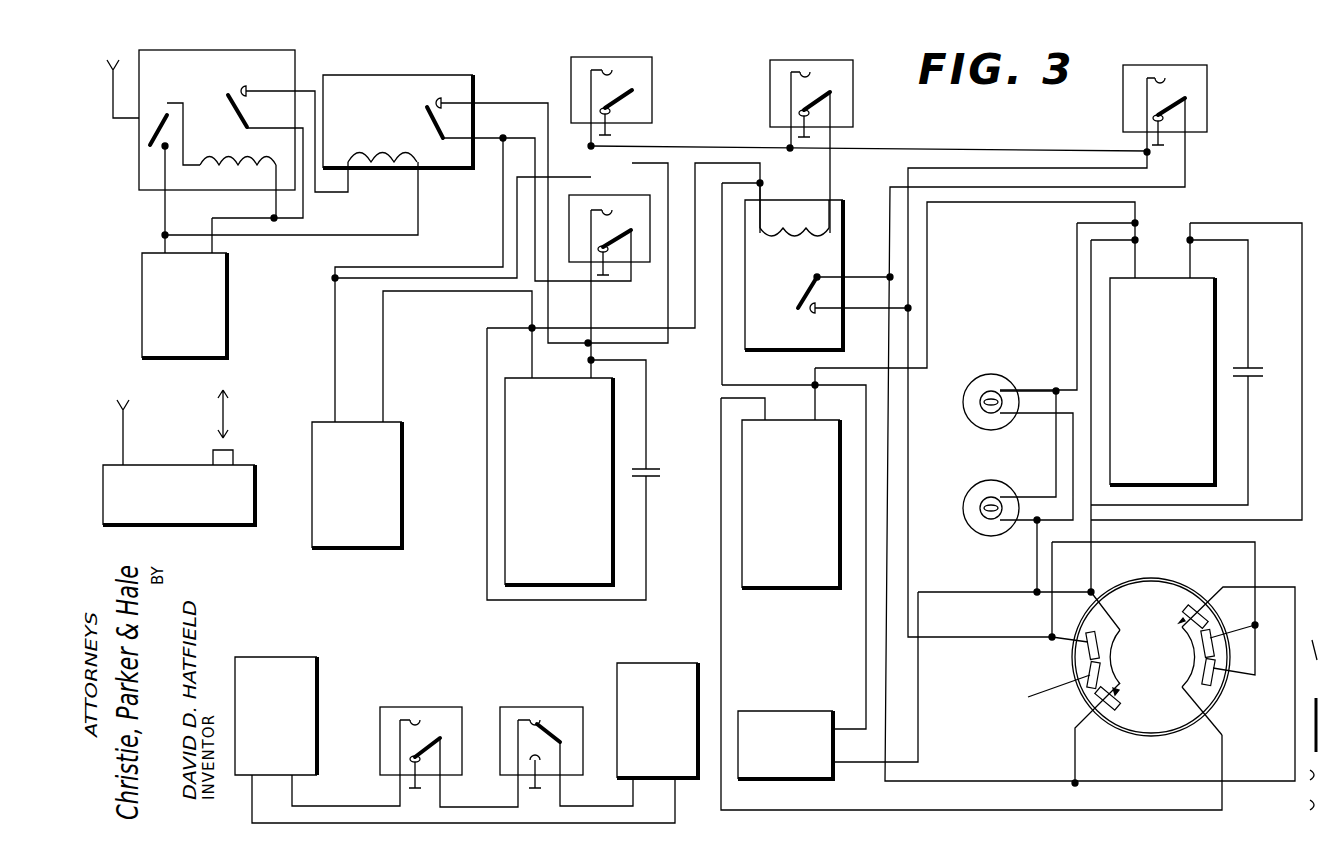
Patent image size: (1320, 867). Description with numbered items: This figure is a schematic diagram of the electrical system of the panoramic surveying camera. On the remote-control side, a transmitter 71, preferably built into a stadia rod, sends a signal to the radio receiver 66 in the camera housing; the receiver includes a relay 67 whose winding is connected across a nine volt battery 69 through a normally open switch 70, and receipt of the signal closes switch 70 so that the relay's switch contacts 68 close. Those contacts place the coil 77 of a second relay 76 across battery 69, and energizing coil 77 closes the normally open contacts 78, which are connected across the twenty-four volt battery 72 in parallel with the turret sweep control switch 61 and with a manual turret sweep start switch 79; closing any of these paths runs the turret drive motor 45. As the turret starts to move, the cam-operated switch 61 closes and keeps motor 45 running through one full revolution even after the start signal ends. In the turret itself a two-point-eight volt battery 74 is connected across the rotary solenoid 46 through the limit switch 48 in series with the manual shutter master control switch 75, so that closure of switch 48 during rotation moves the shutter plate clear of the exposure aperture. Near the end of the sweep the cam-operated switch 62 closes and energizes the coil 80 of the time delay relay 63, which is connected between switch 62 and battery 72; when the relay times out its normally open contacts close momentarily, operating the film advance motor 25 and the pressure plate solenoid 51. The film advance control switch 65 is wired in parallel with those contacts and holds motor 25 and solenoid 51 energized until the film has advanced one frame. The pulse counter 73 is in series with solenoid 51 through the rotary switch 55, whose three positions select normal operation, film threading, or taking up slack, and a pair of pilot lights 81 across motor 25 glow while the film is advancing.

The film advance motor 25 is at (1216, 470).
The turret drive motor 45 is at (575, 578).
The rotary solenoid 46 is at (666, 668).
The limit switch 48 is at (560, 710).
The pressure plate solenoid 51 is at (802, 580).
The rotary switch 55 is at (1066, 708).
The turret sweep control limit switch 61 is at (628, 68).
The film advance time control limit switch 62 is at (843, 71).
The time delay relay 63 is at (807, 256).
The film advance control limit switch 65 is at (1203, 77).
The remote control radio signal receiver 66 is at (220, 117).
The relay 67 is at (197, 117).
The switch contacts 68 is at (233, 88).
The 9 volt battery 69 is at (163, 360).
The normally open switch 70 is at (157, 134).
The transmitter 71 is at (190, 430).
The 24 volt battery 72 is at (393, 520).
The pulse counter 73 is at (805, 712).
The 2.8 volt battery 74 is at (308, 677).
The shutter master control switch 75 is at (438, 708).
The relay 76 is at (398, 113).
The coil 77 is at (377, 168).
The normally open contacts 78 is at (436, 100).
The turret sweep start switch 79 is at (642, 272).
The coil 80 is at (790, 234).
The pilot lights 81 is at (976, 494).